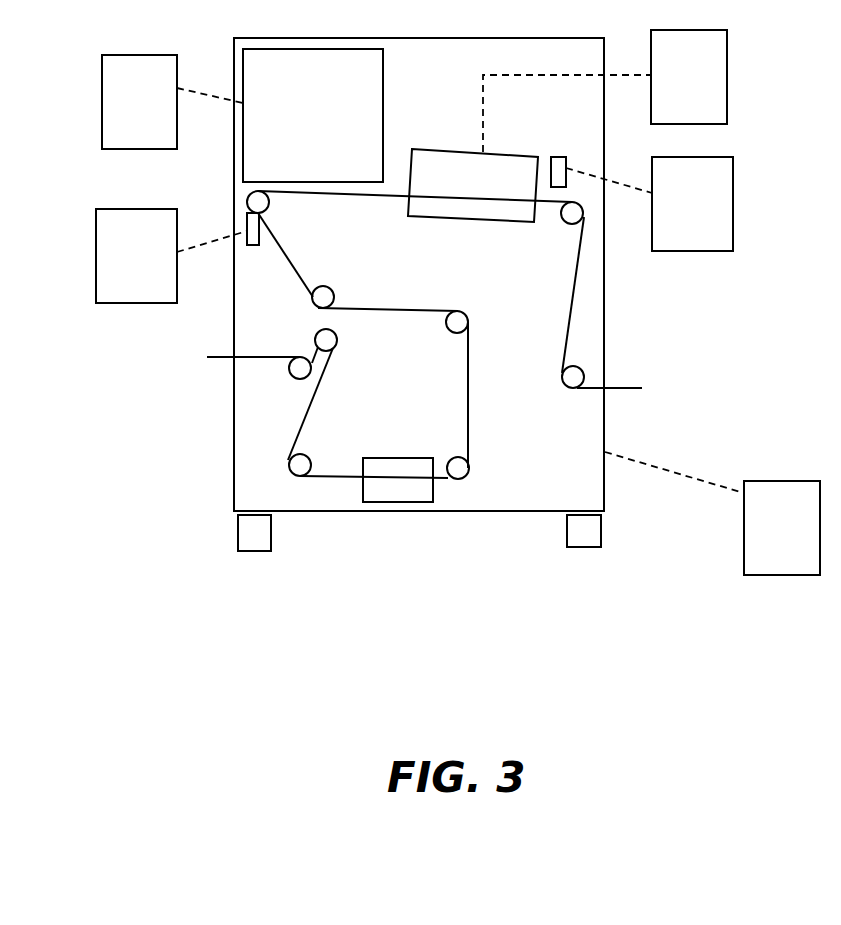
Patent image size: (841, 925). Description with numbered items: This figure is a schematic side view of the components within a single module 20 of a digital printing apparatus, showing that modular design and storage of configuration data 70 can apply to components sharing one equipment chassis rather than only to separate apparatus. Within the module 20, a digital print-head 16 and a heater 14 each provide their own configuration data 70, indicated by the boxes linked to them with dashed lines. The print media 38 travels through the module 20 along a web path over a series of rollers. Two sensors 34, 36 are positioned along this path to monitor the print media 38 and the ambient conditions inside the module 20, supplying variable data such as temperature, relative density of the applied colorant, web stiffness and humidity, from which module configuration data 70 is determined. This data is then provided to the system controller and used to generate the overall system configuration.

The heater 14 is at (448, 153).
The digital print-head 16 is at (324, 119).
The module 20 is at (424, 558).
The sensor 34 is at (260, 235).
The sensor 36 is at (552, 157).
The print media 38 is at (228, 357).
The configuration data 70 is at (152, 122).